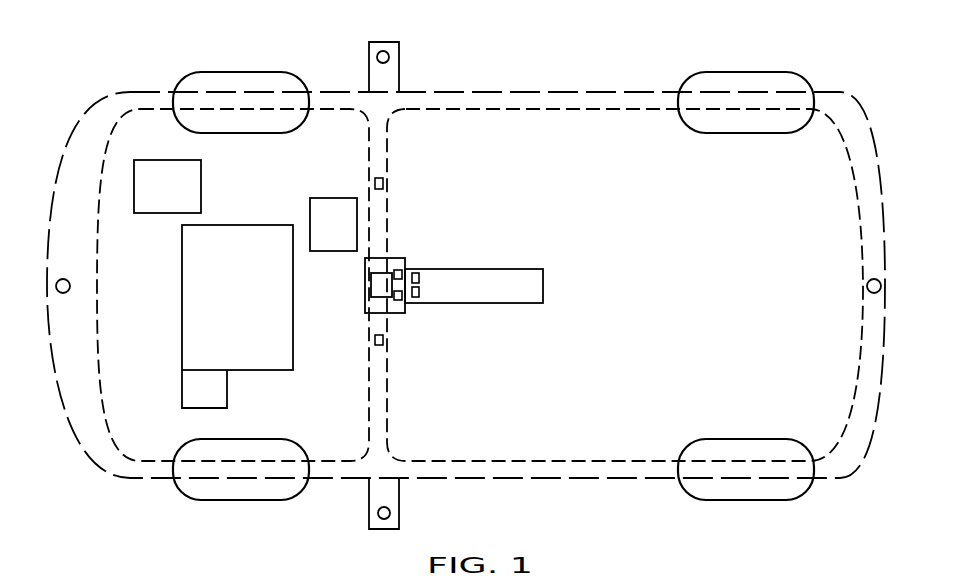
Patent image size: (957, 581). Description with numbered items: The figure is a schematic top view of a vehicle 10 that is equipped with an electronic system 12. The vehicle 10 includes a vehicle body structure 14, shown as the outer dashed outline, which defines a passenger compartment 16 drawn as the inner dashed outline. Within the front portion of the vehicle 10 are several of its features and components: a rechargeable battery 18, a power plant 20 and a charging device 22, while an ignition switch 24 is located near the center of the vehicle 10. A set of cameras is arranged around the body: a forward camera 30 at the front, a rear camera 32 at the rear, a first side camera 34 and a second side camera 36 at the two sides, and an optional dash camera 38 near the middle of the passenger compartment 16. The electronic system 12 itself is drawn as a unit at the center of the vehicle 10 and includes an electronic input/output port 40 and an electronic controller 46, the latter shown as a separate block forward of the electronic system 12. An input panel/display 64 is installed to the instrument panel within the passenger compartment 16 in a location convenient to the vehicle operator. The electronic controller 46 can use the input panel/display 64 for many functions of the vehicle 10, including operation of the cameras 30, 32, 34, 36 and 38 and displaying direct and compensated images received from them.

The vehicle 10 is at (466, 254).
The electronic system 12 is at (360, 313).
The vehicle body structure 14 is at (594, 90).
The passenger compartment 16 is at (515, 110).
The rechargeable battery 18 is at (174, 185).
The power plant 20 is at (211, 290).
The charging device 22 is at (203, 390).
The ignition switch 24 is at (383, 340).
The forward camera 30 is at (65, 293).
The rear camera 32 is at (867, 288).
The first side camera 34 is at (389, 57).
The second side camera 36 is at (390, 514).
The dash camera 38 is at (383, 183).
The electronic input/output port 40 is at (421, 292).
The electronic controller 46 is at (333, 215).
The input panel/display 64 is at (381, 285).